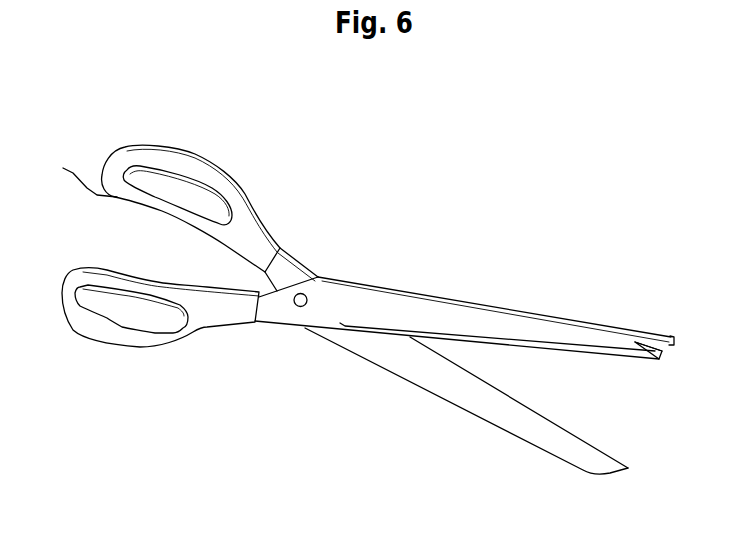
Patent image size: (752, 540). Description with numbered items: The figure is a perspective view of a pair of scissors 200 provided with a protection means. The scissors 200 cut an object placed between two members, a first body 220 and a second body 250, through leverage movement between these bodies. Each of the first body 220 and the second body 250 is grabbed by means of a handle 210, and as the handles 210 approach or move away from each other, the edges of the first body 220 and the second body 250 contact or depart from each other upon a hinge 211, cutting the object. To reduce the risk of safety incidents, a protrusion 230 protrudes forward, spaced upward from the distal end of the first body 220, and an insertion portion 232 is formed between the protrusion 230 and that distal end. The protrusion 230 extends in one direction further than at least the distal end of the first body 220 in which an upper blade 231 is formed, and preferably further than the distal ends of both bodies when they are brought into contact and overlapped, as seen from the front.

The pair of scissors 200 is at (337, 150).
The handle 210 is at (164, 246).
The hinge 211 is at (301, 293).
The first body 220 is at (515, 318).
The protrusion 230 is at (658, 337).
The upper blade 231 is at (657, 360).
The insertion portion 232 is at (664, 353).
The second body 250 is at (407, 360).